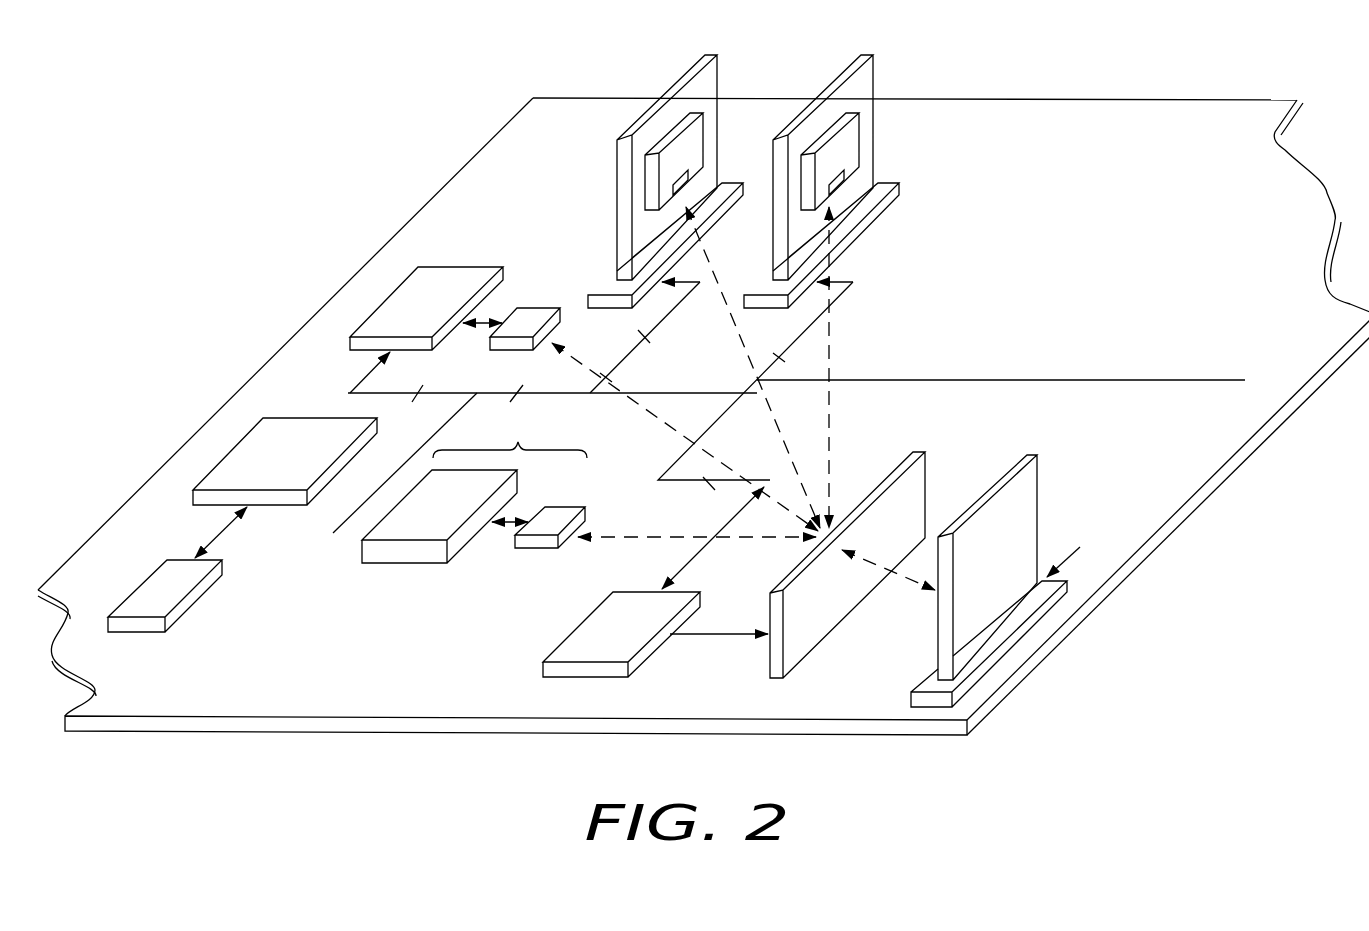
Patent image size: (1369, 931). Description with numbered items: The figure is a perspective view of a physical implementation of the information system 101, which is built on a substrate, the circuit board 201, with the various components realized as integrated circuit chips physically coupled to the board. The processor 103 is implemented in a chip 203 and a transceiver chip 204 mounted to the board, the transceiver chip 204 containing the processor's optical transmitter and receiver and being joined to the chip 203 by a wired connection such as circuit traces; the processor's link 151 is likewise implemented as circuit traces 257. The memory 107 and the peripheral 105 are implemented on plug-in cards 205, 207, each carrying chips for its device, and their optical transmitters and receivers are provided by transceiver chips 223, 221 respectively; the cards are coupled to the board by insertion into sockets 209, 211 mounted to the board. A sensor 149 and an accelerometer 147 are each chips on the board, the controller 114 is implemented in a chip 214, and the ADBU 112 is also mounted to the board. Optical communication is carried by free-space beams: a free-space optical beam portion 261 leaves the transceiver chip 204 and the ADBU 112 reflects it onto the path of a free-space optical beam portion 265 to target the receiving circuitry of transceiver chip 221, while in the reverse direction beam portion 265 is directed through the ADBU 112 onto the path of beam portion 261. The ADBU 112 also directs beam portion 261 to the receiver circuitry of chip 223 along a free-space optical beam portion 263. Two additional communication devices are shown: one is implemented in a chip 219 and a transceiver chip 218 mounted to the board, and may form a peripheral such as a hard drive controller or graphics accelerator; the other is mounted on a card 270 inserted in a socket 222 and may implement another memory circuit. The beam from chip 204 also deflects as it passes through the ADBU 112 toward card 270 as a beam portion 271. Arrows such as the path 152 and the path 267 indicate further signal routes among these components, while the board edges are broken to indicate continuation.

The system 101 is at (457, 75).
The processor 103 is at (538, 435).
The peripheral 105 is at (585, 177).
The memory 107 is at (905, 142).
The ADBU 112 is at (927, 474).
The controller 114 is at (573, 615).
The accelerometer 147 is at (268, 464).
The sensor 149 is at (138, 583).
The link 151 is at (672, 447).
The signal path 152 is at (712, 638).
The circuit board 201 is at (1165, 244).
The chip 203 is at (415, 521).
The transceiver chip 204 is at (565, 507).
The plug-in card 205 is at (620, 125).
The plug-in card 207 is at (787, 134).
The socket 209 is at (708, 230).
The socket 211 is at (873, 228).
The chip 214 is at (597, 644).
The transceiver chip 218 is at (535, 303).
The chip 219 is at (403, 314).
The transceiver chip 221 is at (704, 153).
The socket 222 is at (922, 677).
The transceiver chip 223 is at (860, 155).
The circuit traces 257 is at (720, 418).
The free-space optical beam portion 261 is at (750, 540).
The free-space optical beam portion 263 is at (833, 339).
The free-space optical beam portion 265 is at (738, 328).
The signal path 267 is at (585, 368).
The card 270 is at (1040, 500).
The beam portion 271 is at (913, 583).